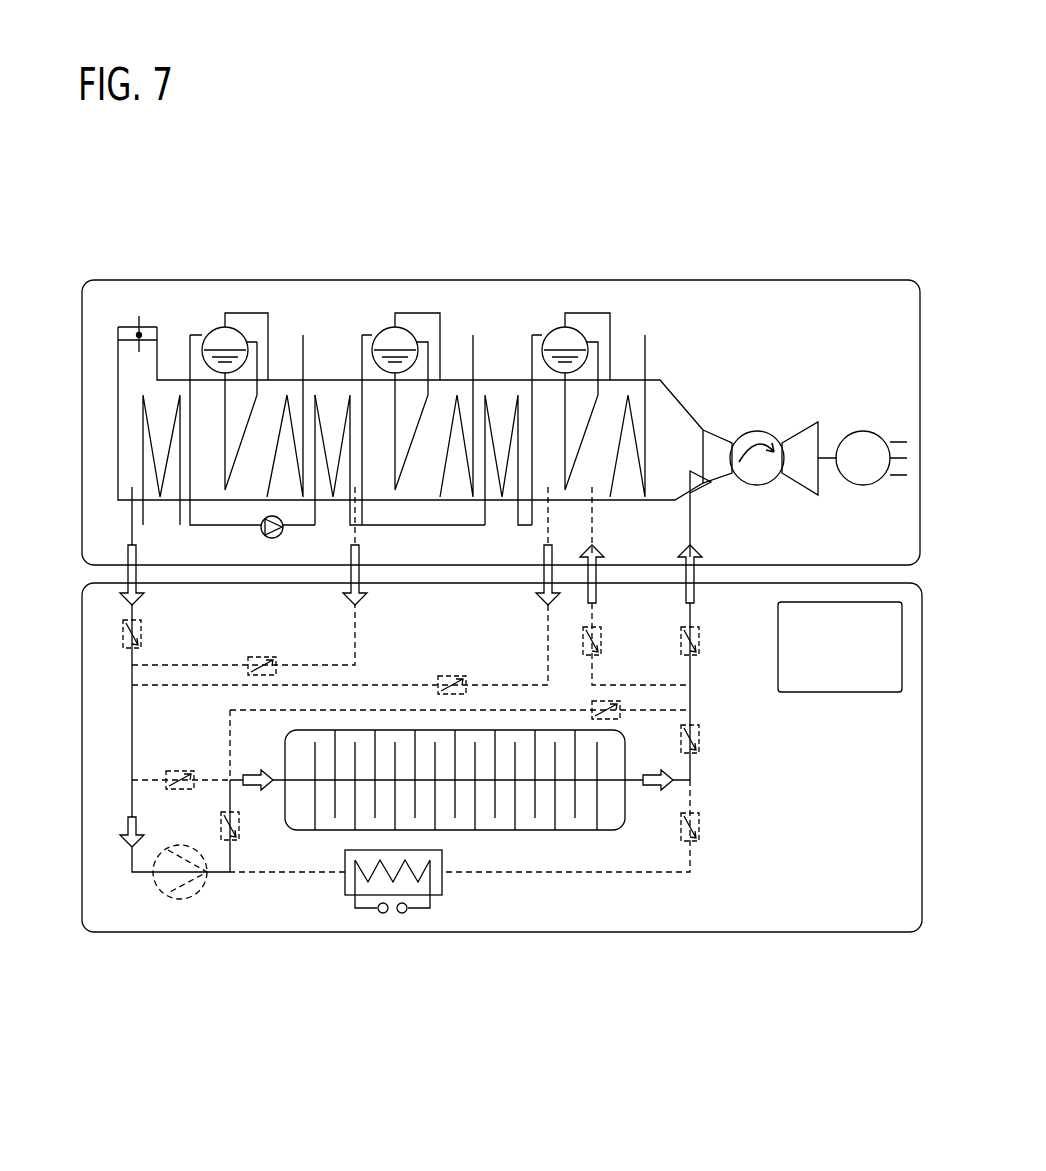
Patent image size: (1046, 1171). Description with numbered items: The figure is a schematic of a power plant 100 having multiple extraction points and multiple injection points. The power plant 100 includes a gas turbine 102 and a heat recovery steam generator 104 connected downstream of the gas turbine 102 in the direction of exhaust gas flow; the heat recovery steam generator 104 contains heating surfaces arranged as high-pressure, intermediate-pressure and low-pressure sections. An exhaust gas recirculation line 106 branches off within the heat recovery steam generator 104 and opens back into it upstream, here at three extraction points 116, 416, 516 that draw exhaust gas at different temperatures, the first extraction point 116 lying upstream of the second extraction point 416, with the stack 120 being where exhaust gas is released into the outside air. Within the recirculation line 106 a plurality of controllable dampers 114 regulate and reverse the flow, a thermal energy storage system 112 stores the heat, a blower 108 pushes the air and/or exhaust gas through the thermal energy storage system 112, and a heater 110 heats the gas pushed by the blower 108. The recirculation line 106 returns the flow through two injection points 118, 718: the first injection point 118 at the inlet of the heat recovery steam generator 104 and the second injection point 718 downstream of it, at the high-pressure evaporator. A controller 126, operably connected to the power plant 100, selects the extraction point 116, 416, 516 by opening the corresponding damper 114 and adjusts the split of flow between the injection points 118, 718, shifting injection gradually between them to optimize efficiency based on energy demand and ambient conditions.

The power plant 100 is at (744, 172).
The gas turbine 102 is at (777, 392).
The heat recovery steam generator 104 is at (236, 250).
The exhaust gas recirculation line 106 is at (132, 707).
The blower 108 is at (180, 898).
The heater 110 is at (345, 895).
The thermal energy storage system 112 is at (513, 830).
The controllable dampers 114 is at (122, 635).
The first extraction point 116 is at (132, 487).
The first injection point 118 is at (703, 478).
The stack 120 is at (132, 378).
The controller 126 is at (852, 692).
The second extraction point 416 is at (357, 487).
The third extraction point 516 is at (548, 487).
The second injection point 718 is at (592, 487).